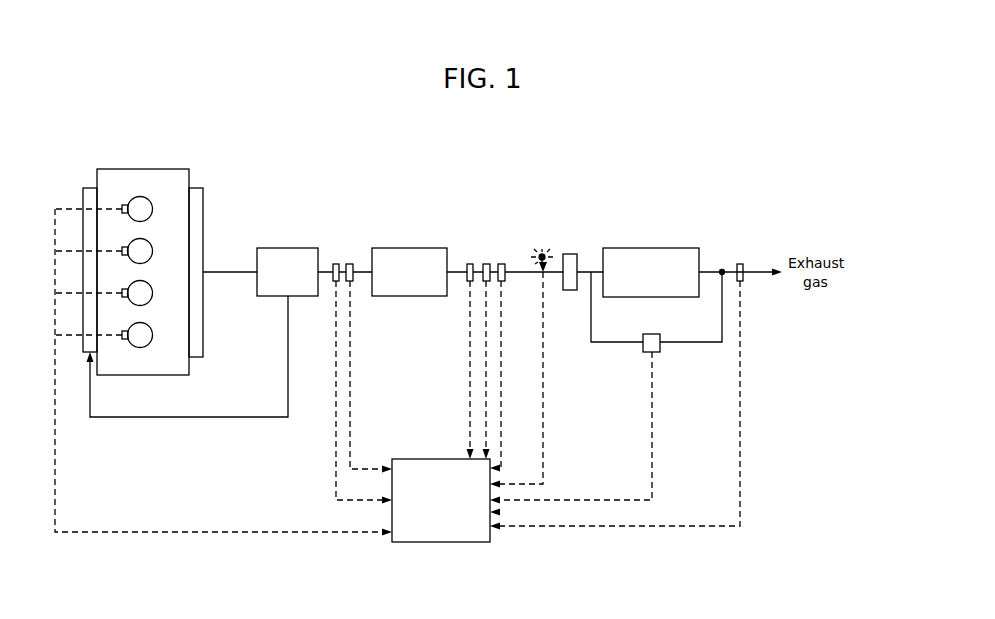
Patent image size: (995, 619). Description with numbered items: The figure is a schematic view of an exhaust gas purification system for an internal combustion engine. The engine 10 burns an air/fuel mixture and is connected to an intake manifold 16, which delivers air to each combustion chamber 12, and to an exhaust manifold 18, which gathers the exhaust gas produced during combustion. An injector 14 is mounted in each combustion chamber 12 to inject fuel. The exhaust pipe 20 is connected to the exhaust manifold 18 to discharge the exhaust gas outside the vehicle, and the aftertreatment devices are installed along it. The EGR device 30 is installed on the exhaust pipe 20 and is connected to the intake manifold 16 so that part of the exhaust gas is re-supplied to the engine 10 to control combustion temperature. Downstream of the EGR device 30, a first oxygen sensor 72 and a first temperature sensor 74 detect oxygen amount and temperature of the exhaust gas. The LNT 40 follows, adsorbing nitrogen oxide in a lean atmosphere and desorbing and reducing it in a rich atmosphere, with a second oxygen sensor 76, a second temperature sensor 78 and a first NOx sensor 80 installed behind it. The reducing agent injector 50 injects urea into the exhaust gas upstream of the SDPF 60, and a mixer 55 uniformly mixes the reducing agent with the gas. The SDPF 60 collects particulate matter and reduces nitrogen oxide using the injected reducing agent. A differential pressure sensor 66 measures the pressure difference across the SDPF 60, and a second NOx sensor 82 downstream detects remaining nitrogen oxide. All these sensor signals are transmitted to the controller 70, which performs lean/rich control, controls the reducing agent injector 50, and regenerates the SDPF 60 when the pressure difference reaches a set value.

The engine 10 is at (163, 152).
The combustion chamber 12 is at (138, 197).
The injector 14 is at (122, 205).
The intake manifold 16 is at (88, 188).
The exhaust manifold 18 is at (204, 186).
The exhaust pipe 20 is at (231, 272).
The exhaust gas recirculation (EGR) device 30 is at (274, 248).
The lean NOx trap (LNT) 40 is at (403, 248).
The reducing agent injector 50 is at (543, 248).
The mixer 55 is at (570, 254).
The selective catalytic reduction catalyst on diesel particulate filter (SDPF) 60 is at (652, 248).
The differential pressure sensor 66 is at (658, 352).
The controller 70 is at (428, 542).
The first oxygen sensor 72 is at (336, 264).
The first temperature sensor 74 is at (350, 264).
The second oxygen sensor 76 is at (470, 264).
The second temperature sensor 78 is at (486, 264).
The first NOx sensor 80 is at (502, 264).
The second NOx sensor 82 is at (740, 264).